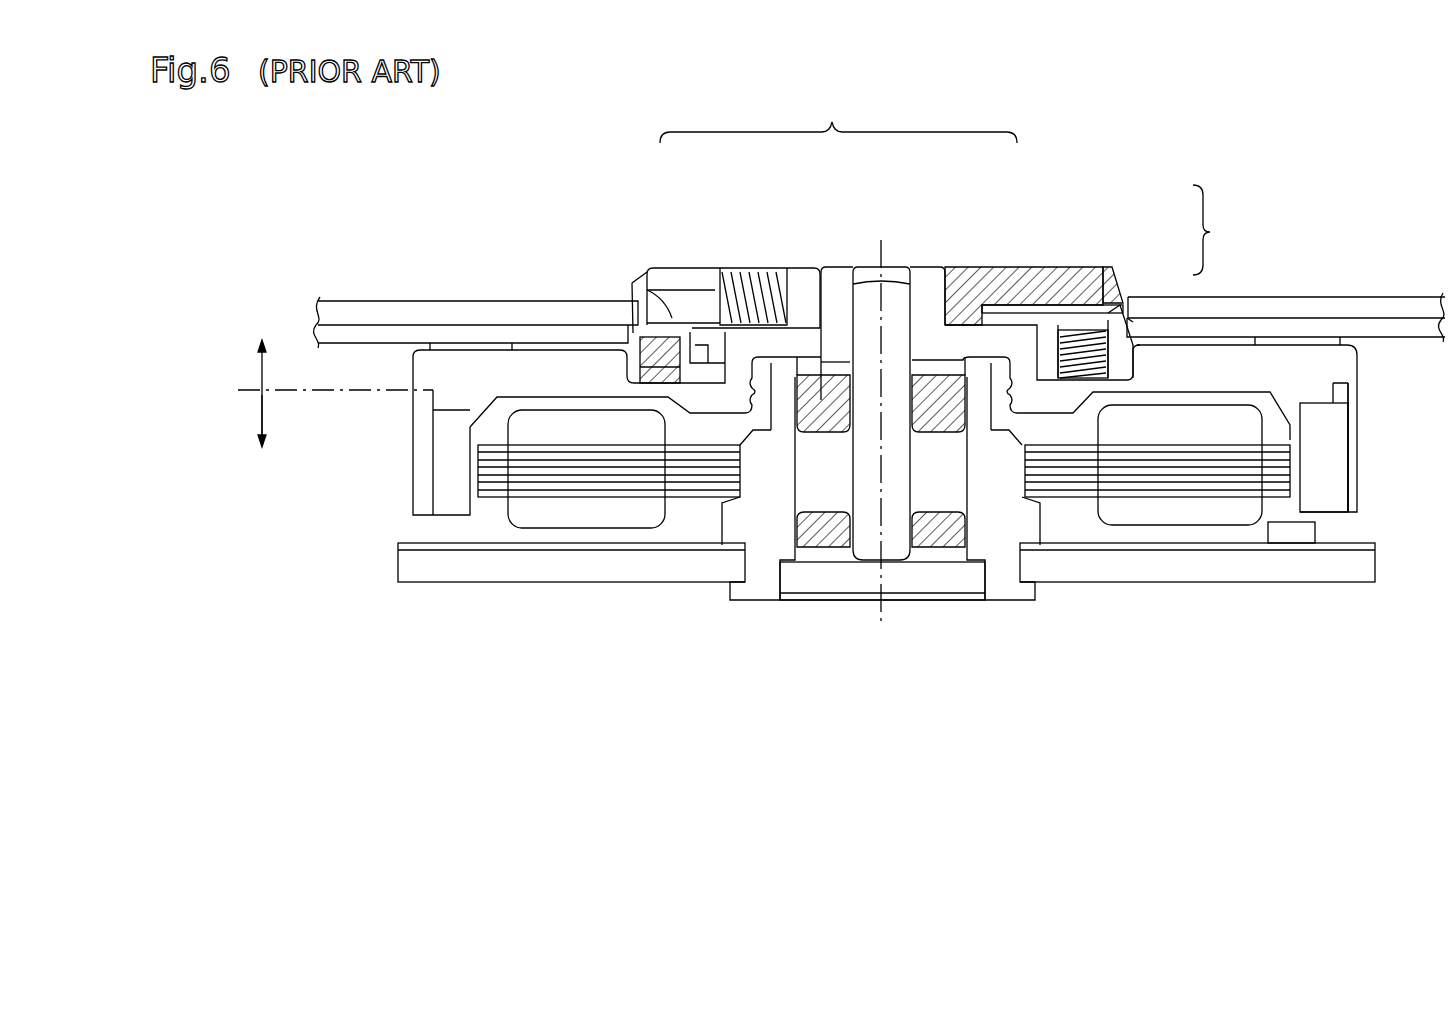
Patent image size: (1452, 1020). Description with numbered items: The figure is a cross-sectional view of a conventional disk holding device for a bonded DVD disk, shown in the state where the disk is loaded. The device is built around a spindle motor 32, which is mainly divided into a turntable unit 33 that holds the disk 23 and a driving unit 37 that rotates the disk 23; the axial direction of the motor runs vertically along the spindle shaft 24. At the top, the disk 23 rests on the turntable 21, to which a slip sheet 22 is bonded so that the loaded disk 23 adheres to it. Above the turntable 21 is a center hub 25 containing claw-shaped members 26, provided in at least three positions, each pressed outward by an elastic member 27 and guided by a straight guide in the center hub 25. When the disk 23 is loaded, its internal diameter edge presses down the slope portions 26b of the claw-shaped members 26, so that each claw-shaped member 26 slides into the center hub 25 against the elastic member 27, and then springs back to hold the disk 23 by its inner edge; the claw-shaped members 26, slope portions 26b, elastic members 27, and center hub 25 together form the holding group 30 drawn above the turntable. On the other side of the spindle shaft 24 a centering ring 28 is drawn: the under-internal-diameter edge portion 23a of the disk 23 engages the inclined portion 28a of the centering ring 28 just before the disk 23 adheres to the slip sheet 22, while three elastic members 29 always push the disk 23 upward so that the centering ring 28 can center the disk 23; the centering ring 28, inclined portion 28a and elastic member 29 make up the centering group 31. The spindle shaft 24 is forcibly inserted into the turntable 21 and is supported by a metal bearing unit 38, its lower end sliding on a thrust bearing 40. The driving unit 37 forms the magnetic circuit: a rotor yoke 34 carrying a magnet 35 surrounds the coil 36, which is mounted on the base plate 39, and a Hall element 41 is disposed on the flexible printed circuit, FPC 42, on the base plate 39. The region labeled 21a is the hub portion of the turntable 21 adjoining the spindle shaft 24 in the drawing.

The turntable 21 is at (440, 373).
The hub 21a is at (930, 282).
The slip sheet 22 is at (458, 348).
The disk 23 is at (1410, 326).
The under-internal-diameter edge portion 23a is at (1123, 332).
The spindle shaft 24 is at (893, 290).
The center hub 25 is at (1020, 268).
The claw-shaped member 26 is at (692, 280).
The slope portion 26b is at (640, 278).
The elastic member 27 is at (742, 275).
The centering ring 28 is at (1103, 268).
The inclined portion 28a is at (1125, 325).
The elastic member 29 is at (1103, 342).
The first clamp assembly 30 is at (838, 116).
The second clamp assembly 31 is at (1222, 230).
The spindle motor 32 is at (468, 596).
The turntable unit 33 is at (261, 377).
The rotor yoke 34 is at (1348, 436).
The magnet 35 is at (1328, 488).
The coil 36 is at (1180, 514).
The driving unit 37 is at (261, 435).
The metal bearing unit 38 is at (997, 540).
The base plate 39 is at (600, 577).
The thrust bearing 40 is at (822, 583).
The Hall element 41 is at (1283, 530).
The flexible printed circuit (FPC) 42 is at (1128, 545).